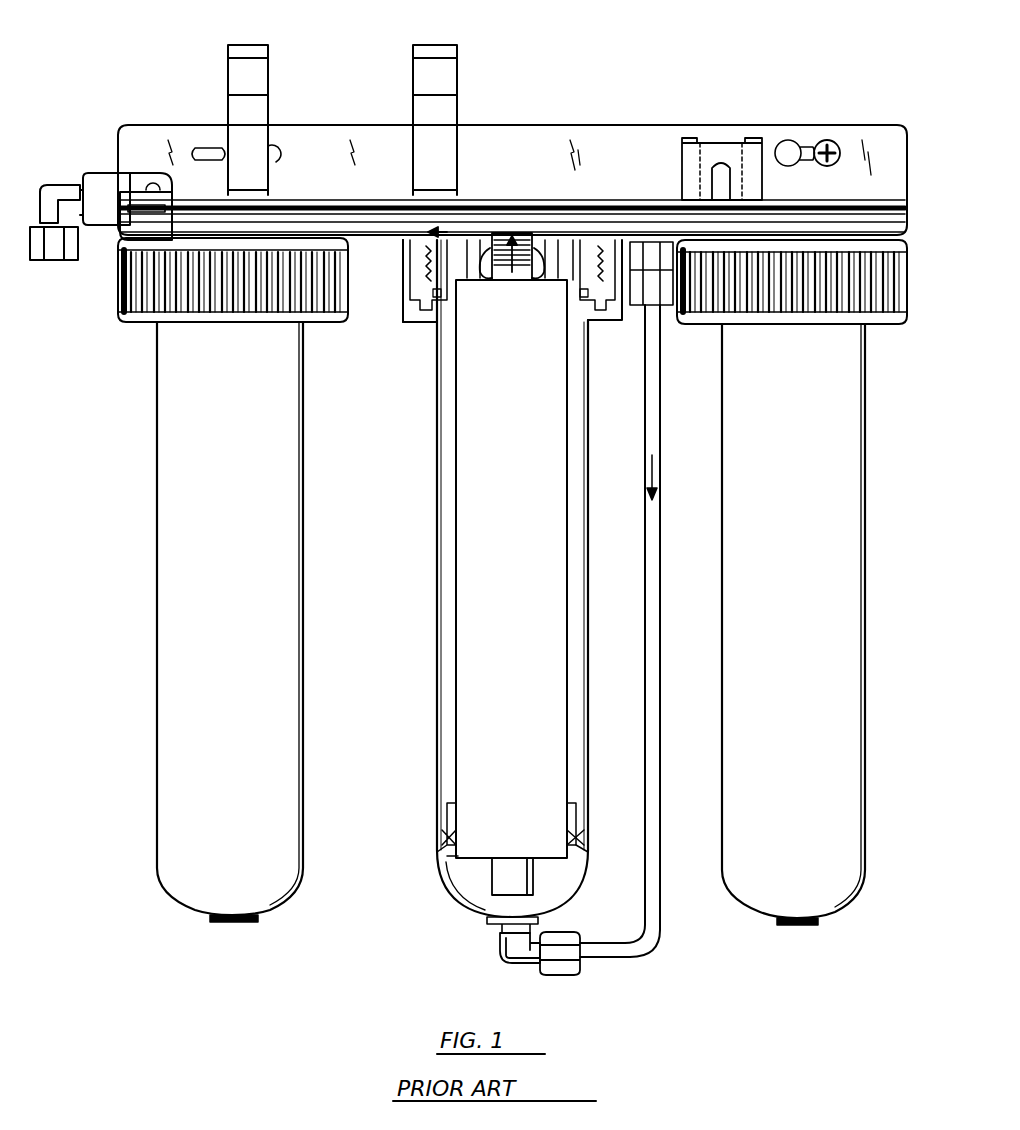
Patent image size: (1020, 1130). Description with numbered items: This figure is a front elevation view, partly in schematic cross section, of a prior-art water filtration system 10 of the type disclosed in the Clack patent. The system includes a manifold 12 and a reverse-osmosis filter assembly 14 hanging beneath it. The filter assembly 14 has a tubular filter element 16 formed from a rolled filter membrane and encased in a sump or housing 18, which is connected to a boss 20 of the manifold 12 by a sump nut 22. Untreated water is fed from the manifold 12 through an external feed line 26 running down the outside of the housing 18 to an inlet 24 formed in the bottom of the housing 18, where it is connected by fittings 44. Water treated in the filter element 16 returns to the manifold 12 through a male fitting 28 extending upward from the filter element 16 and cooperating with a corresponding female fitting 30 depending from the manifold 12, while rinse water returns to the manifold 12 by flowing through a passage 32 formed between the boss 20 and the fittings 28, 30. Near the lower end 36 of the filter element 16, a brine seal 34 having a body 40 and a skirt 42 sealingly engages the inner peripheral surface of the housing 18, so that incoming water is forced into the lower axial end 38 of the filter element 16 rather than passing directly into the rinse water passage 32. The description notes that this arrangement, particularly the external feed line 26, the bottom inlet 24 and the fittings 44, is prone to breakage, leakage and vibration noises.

The water filtration system 10 is at (630, 72).
The manifold 12 is at (705, 120).
The reverse-osmosis filter assembly 14 is at (438, 618).
The tubular filter element 16 is at (578, 552).
The housing 18 is at (437, 660).
The boss 20 is at (425, 248).
The sump nut 22 is at (402, 262).
The inlet 24 is at (495, 926).
The external feed line 26 is at (663, 474).
The male fitting 28 is at (470, 290).
The female fitting 30 is at (545, 265).
The passage 32 is at (482, 262).
The brine seal 34 is at (444, 822).
The lower end 36 is at (446, 858).
The lower axial end 38 is at (466, 866).
The body 40 is at (580, 806).
The skirt 42 is at (580, 830).
The fittings 44 is at (565, 933).